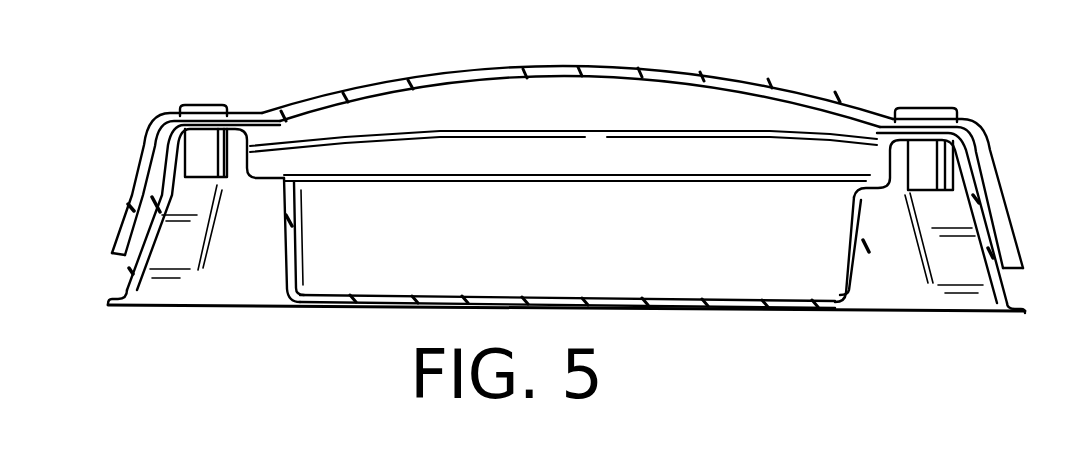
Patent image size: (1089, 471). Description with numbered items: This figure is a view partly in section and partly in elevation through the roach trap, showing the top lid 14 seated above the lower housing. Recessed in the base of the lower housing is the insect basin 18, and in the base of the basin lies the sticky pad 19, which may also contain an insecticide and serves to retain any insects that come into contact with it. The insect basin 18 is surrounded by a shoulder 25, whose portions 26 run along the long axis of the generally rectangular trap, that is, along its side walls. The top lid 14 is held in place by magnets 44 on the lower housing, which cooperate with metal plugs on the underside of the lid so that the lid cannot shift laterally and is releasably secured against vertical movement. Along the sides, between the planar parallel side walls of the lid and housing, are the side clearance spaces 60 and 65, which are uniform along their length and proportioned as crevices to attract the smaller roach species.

The top lid 14 is at (812, 92).
The insect basin 18 is at (572, 272).
The sticky pad 19 is at (640, 297).
The shoulder 25 is at (298, 171).
The portions along the long axis 26 is at (345, 139).
The magnets 44 is at (220, 120).
The side clearance space 60 is at (118, 240).
The side clearance space 65 is at (1013, 228).